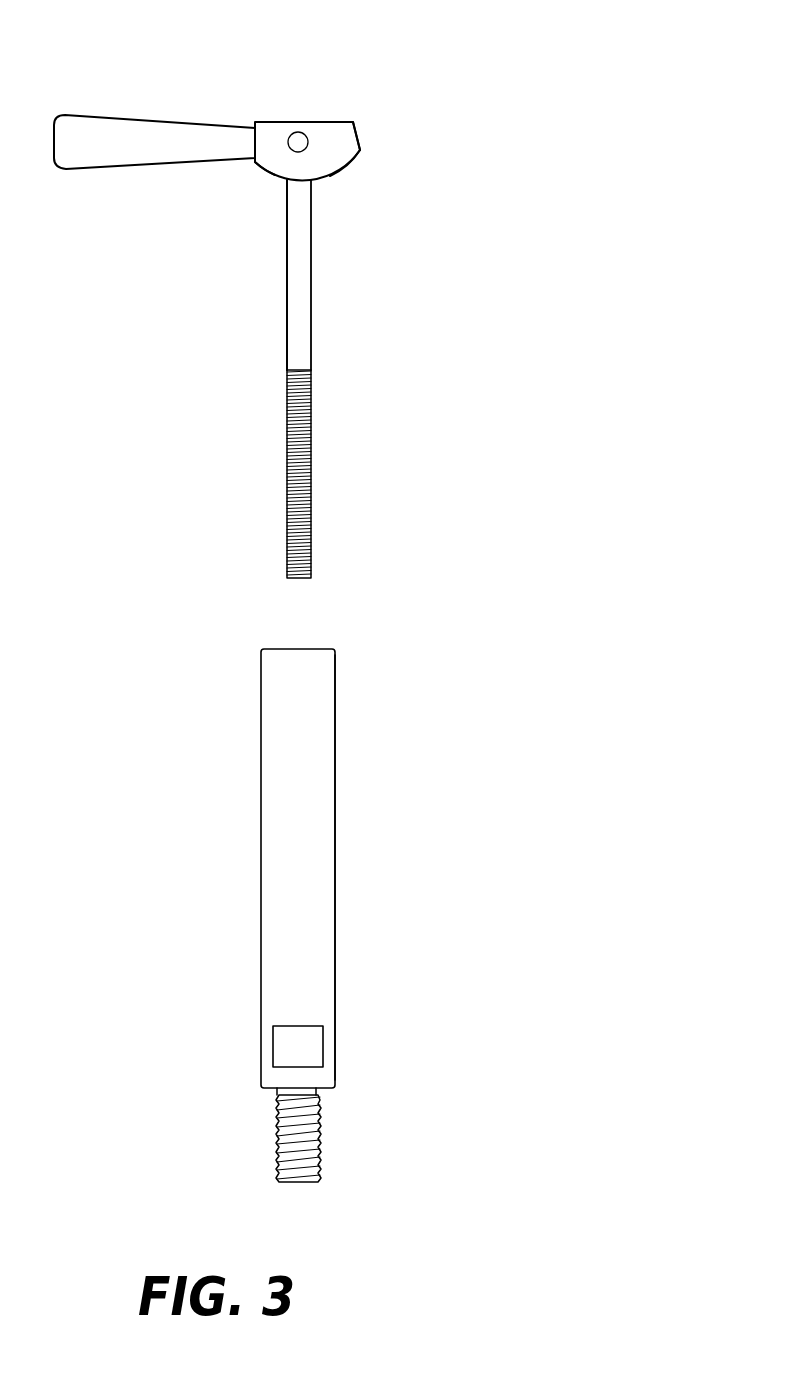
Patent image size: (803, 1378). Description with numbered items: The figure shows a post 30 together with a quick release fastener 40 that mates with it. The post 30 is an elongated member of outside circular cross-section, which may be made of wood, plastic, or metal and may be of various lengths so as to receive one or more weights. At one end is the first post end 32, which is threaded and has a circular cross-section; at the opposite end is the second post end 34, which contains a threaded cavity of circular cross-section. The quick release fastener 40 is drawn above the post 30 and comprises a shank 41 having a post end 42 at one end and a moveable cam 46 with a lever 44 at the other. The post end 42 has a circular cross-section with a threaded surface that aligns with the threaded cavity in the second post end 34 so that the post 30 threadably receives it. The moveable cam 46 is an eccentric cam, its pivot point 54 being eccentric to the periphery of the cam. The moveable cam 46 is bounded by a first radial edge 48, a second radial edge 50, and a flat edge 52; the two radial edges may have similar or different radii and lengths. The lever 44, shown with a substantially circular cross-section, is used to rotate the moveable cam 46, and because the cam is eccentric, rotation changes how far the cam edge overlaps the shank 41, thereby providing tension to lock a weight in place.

The post 30 is at (338, 857).
The first post end 32 is at (323, 1137).
The second post end 34 is at (337, 668).
The quick release fastener 40 is at (308, 303).
The shank 41 is at (287, 308).
The post end 42 is at (308, 518).
The lever 44 is at (103, 115).
The moveable cam 46 is at (358, 133).
The first radial edge 48 is at (337, 172).
The second radial edge 50 is at (270, 173).
The flat edge 52 is at (280, 120).
The pivot point 54 is at (300, 140).